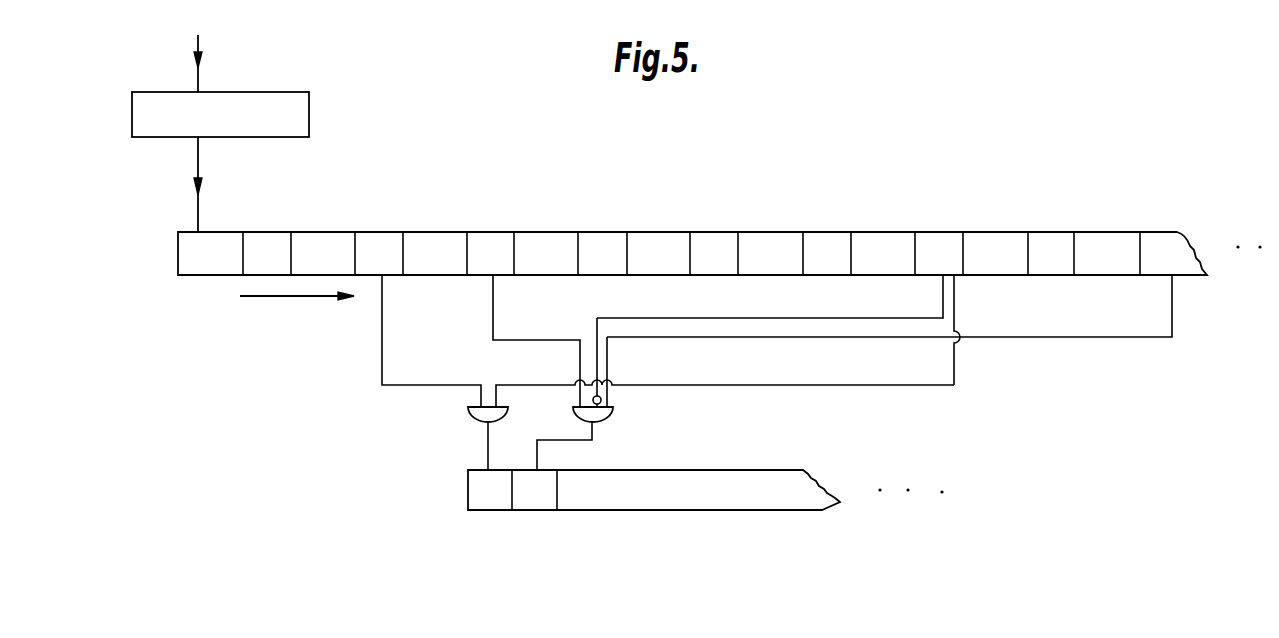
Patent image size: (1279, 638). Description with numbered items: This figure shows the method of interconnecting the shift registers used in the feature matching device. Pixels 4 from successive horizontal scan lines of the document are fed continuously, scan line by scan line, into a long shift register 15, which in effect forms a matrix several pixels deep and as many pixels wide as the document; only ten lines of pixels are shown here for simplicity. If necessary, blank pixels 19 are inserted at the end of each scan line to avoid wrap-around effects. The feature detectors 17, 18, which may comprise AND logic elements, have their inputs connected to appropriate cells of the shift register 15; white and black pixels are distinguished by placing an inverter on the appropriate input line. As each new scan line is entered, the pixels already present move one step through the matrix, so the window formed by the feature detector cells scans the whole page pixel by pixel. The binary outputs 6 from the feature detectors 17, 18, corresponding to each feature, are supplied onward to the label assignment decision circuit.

The pixels 4 is at (198, 67).
The blank pixels 19 is at (312, 109).
The shift register 15 is at (178, 268).
The feature detector 18 is at (478, 412).
The feature detector 17 is at (600, 414).
The binary outputs 6 is at (468, 506).